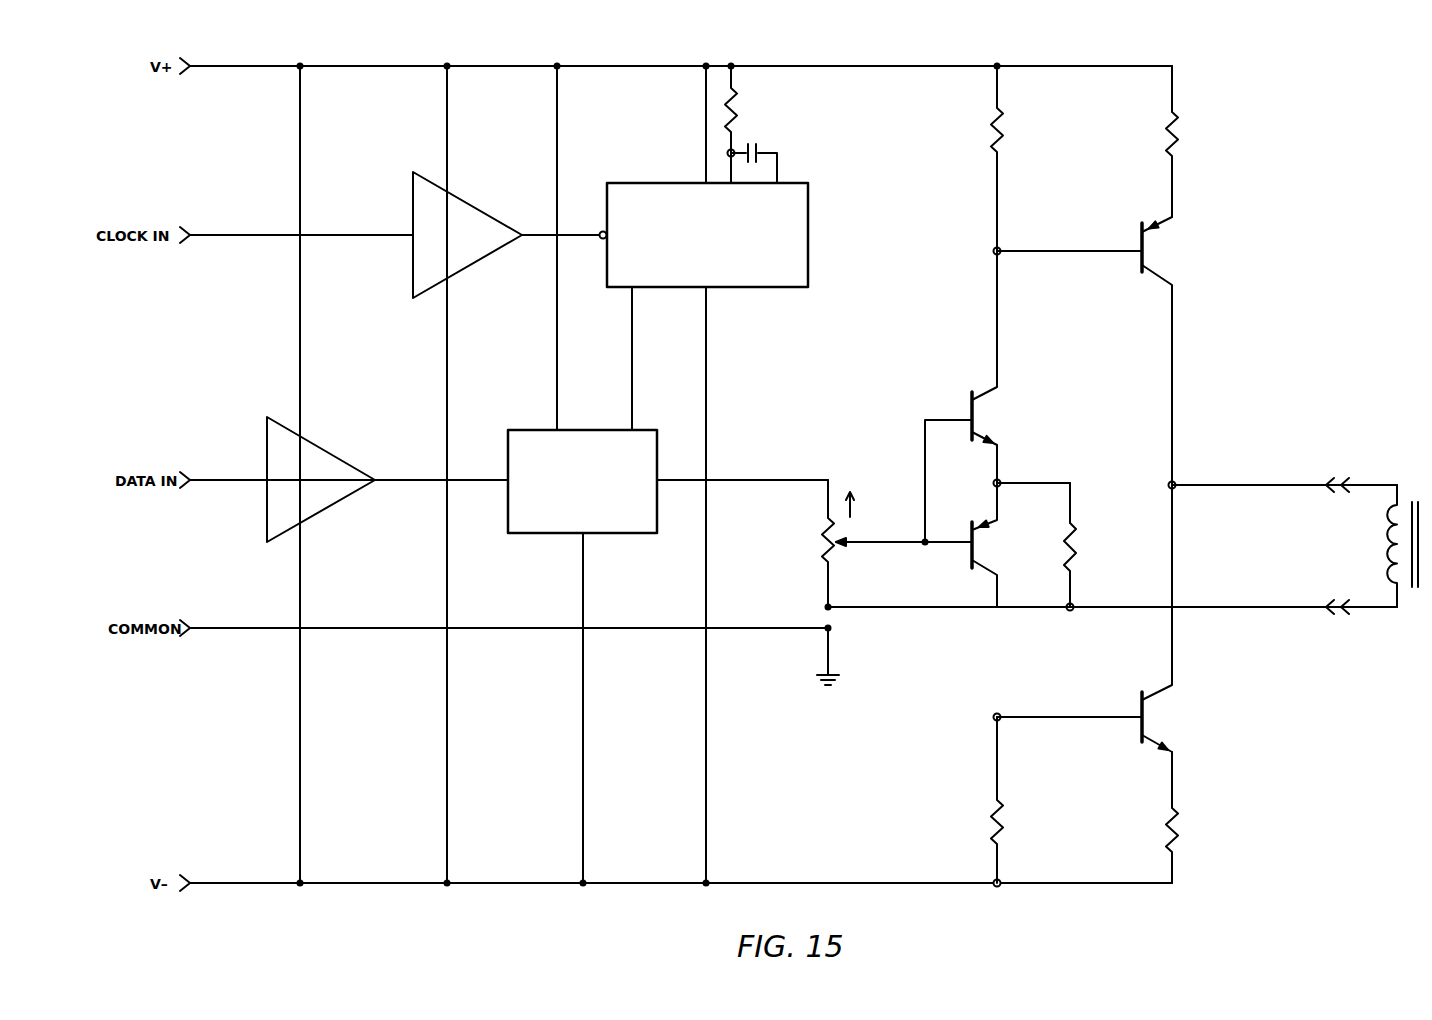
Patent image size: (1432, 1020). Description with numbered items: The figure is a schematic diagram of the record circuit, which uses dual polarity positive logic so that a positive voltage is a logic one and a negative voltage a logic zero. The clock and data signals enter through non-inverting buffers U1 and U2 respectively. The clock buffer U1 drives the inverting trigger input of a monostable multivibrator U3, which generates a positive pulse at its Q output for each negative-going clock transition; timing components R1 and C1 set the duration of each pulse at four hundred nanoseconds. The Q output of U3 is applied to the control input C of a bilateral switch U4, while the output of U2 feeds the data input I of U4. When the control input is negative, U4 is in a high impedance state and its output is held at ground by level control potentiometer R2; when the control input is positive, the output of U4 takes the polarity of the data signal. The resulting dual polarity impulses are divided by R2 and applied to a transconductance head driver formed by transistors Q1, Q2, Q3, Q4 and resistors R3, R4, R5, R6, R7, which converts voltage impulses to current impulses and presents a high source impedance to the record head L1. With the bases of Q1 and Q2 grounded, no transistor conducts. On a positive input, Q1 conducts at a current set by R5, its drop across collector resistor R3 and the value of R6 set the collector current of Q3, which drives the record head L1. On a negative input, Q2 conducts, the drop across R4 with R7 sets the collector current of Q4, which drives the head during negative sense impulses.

The clock buffer U1 is at (467, 235).
The data buffer U2 is at (321, 479).
The monostable multivibrator U3 is at (707, 235).
The bilateral switch U4 is at (582, 481).
The timing resistor R1 is at (744, 124).
The level control potentiometer R2 is at (813, 543).
The Q1 collector resistor R3 is at (1010, 158).
The Q2 collector resistor R4 is at (1010, 800).
The emitter resistor R5 is at (1081, 545).
The Q3 emitter resistor R6 is at (1187, 141).
The Q4 emitter resistor R7 is at (1186, 817).
The timing capacitor C1 is at (757, 155).
The transistor Q1 is at (989, 367).
The transistor Q2 is at (989, 545).
The transistor Q3 is at (1162, 351).
The transistor Q4 is at (1160, 618).
The record head L1 is at (1360, 546).